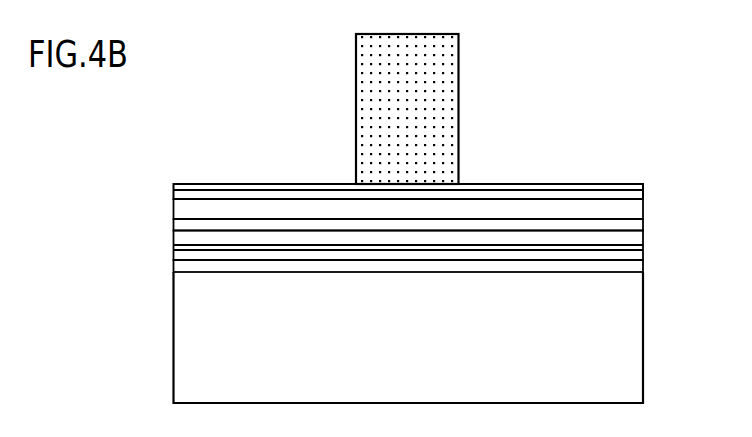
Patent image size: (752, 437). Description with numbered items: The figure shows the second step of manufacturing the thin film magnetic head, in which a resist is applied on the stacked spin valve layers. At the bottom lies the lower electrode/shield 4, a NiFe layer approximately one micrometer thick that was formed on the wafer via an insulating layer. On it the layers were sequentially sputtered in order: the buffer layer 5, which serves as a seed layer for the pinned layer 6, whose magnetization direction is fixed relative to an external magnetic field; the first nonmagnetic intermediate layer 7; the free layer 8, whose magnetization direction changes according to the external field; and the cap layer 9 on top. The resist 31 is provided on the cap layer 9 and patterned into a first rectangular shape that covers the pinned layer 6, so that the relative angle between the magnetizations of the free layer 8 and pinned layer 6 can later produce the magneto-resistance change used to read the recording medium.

The lower electrode/shield 4 is at (644, 319).
The buffer layer 5 is at (644, 268).
The pinned layer 6 is at (648, 231).
The first nonmagnetic intermediate layer 7 is at (644, 220).
The free layer 8 is at (644, 210).
The cap layer 9 is at (647, 185).
The resist 31 is at (459, 96).